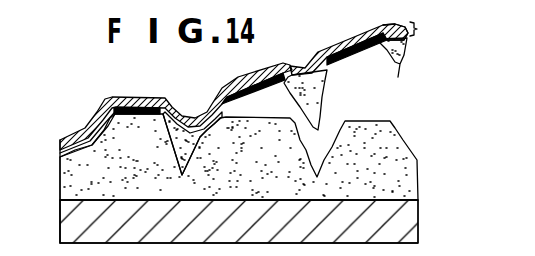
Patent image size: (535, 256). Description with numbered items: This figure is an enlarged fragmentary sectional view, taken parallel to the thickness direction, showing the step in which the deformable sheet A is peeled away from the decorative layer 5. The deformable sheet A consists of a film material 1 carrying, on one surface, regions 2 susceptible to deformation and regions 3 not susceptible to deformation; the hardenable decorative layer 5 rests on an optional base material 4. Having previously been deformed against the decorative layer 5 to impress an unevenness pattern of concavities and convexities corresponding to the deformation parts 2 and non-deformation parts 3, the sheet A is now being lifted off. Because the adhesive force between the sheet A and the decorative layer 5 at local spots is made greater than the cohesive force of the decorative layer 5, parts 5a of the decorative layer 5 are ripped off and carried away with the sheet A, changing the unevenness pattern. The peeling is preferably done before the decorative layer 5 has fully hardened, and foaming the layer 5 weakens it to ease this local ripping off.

The film material 1 is at (396, 27).
The region susceptible to deformation 2 is at (302, 72).
The region not susceptible to deformation 3 is at (348, 42).
The base material 4 is at (407, 225).
The decorative layer 5 is at (407, 163).
The parts of the decorative layer 5a is at (189, 124).
The deformable sheet A is at (422, 27).